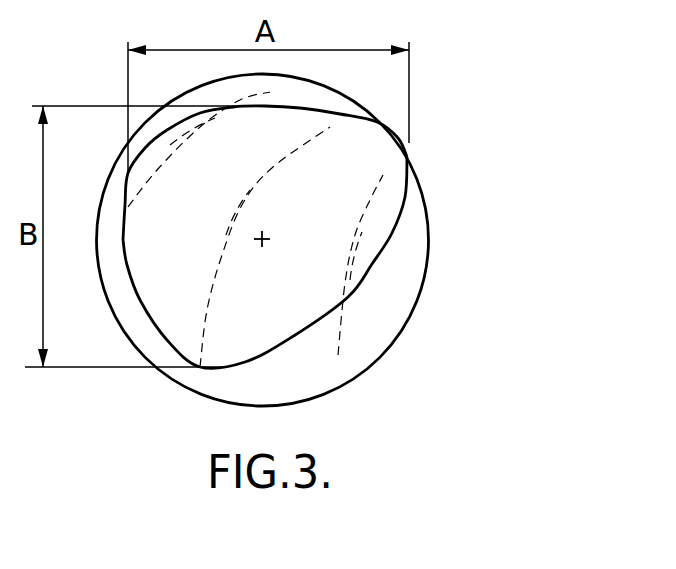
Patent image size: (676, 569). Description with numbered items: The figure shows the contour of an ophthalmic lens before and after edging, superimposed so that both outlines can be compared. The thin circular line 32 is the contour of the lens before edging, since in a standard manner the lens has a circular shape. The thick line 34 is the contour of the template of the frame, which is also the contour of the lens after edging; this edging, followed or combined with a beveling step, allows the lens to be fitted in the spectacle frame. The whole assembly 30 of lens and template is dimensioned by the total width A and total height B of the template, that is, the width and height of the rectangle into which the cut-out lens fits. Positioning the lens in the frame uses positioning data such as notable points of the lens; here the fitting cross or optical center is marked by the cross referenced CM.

The ball 30 is at (320, 210).
The outer spherical surface 32 is at (400, 332).
The inner weighted body 34 is at (372, 264).